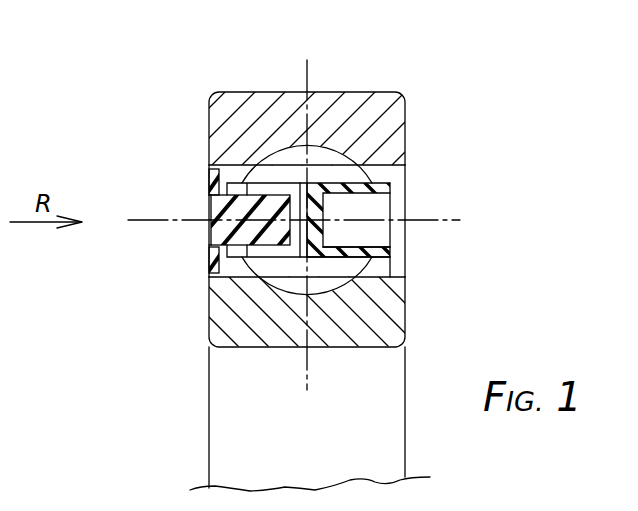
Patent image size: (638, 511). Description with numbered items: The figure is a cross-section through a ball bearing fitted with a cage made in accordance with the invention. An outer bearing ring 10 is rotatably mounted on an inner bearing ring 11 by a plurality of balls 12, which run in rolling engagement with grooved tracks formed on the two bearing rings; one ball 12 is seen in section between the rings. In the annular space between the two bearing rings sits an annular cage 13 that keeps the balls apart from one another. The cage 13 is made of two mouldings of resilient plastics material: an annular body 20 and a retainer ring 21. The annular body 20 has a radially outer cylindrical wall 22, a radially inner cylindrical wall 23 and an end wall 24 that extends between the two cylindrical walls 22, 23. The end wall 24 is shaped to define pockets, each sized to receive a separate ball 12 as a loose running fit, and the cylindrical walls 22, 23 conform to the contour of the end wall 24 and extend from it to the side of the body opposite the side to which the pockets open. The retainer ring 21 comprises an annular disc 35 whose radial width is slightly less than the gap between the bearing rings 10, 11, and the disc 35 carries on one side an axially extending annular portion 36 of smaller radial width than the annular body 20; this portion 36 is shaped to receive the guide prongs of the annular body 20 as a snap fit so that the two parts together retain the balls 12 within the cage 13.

The outer bearing ring 10 is at (209, 128).
The inner bearing ring 11 is at (209, 338).
The ball 12 is at (285, 162).
The annular cage 13 is at (399, 189).
The annular body 20 is at (392, 208).
The retainer ring 21 is at (209, 243).
The radially outer cylindrical wall 22 is at (392, 196).
The radially inner cylindrical wall 23 is at (391, 253).
The end wall 24 is at (327, 234).
The annular disc 35 is at (209, 188).
The axially extending annular portion 36 is at (277, 233).